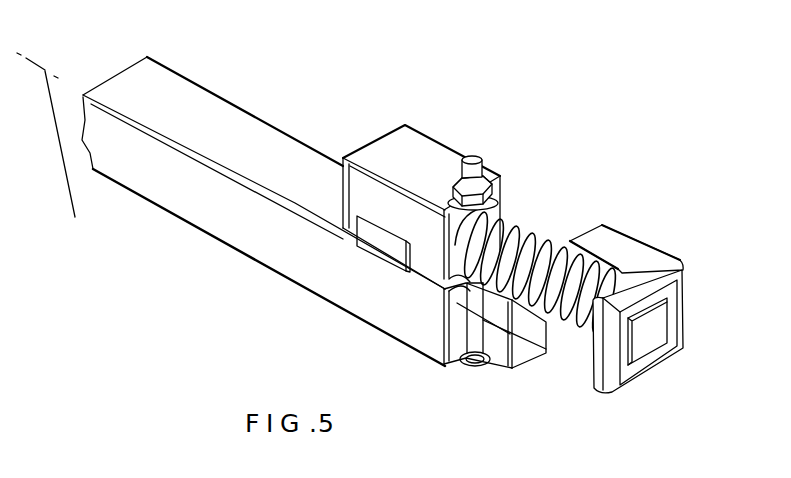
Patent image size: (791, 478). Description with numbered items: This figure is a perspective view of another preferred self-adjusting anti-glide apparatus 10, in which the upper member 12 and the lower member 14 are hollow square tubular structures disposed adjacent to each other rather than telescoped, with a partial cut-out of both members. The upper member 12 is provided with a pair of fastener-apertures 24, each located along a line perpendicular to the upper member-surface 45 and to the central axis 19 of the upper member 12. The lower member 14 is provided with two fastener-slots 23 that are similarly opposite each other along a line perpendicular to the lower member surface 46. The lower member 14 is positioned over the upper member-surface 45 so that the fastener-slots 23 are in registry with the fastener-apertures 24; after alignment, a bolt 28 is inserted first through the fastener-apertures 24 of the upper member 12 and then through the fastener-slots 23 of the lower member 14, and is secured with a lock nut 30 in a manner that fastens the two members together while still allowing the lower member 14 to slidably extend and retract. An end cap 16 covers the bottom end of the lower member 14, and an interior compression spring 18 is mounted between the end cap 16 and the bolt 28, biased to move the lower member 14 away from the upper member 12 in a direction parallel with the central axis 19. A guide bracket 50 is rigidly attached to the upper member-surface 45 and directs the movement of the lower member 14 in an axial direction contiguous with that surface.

The anti-glide apparatus 10 is at (437, 73).
The upper member 12 is at (233, 217).
The lower member 14 is at (433, 260).
The end cap 16 is at (620, 250).
The interior compression spring 18 is at (579, 332).
The central axis 19 is at (64, 143).
The fastener-slots 23 is at (500, 230).
The fastener-apertures 24 is at (475, 357).
The bolt 28 is at (478, 330).
The lock nut 30 is at (493, 175).
The upper member-surface 45 is at (192, 120).
The lower member surface 46 is at (410, 162).
The guide bracket 50 is at (377, 245).